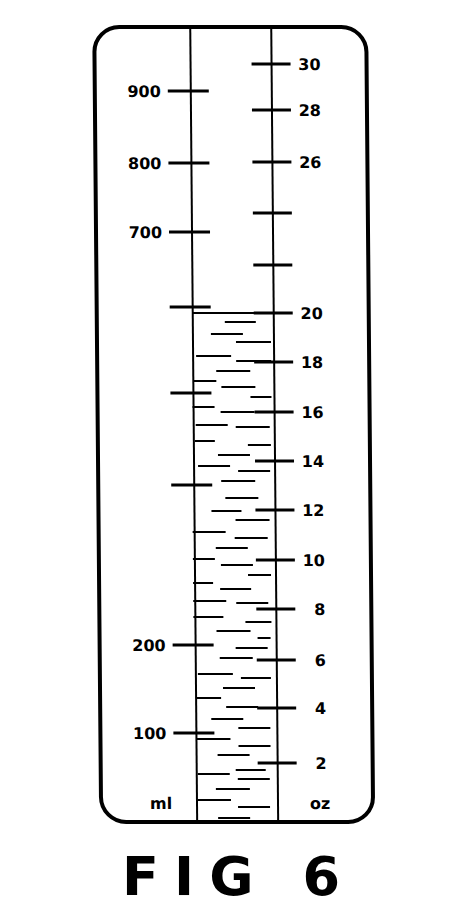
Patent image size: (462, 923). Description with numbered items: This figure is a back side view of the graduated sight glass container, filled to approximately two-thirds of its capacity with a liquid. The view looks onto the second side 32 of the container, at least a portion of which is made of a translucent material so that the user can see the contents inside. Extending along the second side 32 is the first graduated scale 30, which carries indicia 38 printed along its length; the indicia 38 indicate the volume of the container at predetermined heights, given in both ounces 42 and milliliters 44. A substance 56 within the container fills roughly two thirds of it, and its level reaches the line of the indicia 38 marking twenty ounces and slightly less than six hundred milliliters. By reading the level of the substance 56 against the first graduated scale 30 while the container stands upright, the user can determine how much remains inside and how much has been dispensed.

The second side 32 is at (108, 70).
The first graduated scale 30 is at (190, 196).
The milliliters 44 is at (134, 307).
The indicia 38 is at (146, 397).
The ounces 42 is at (321, 210).
The substance 56 is at (237, 312).